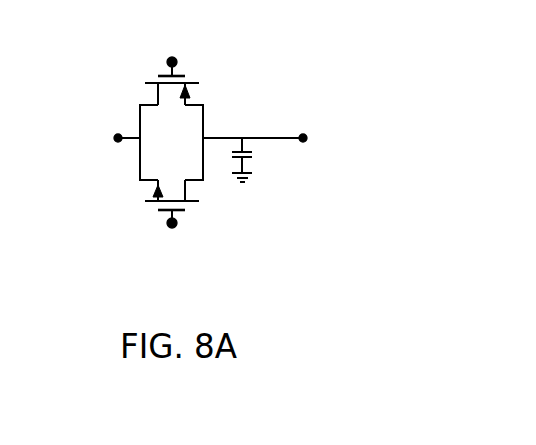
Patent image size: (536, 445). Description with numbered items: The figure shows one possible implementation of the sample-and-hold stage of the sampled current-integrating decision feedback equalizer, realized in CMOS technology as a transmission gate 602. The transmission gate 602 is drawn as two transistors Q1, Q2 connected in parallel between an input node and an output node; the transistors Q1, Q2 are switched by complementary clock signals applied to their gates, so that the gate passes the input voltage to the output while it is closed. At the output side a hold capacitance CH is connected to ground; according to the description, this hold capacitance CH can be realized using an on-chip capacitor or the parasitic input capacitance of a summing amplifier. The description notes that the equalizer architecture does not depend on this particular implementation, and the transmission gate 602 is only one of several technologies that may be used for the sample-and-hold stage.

The transmission gate 602 is at (222, 129).
The NMOS transistor of transmission gate Q1 is at (173, 199).
The PMOS transistor of transmission gate Q2 is at (172, 86).
The hold capacitance CH is at (257, 160).